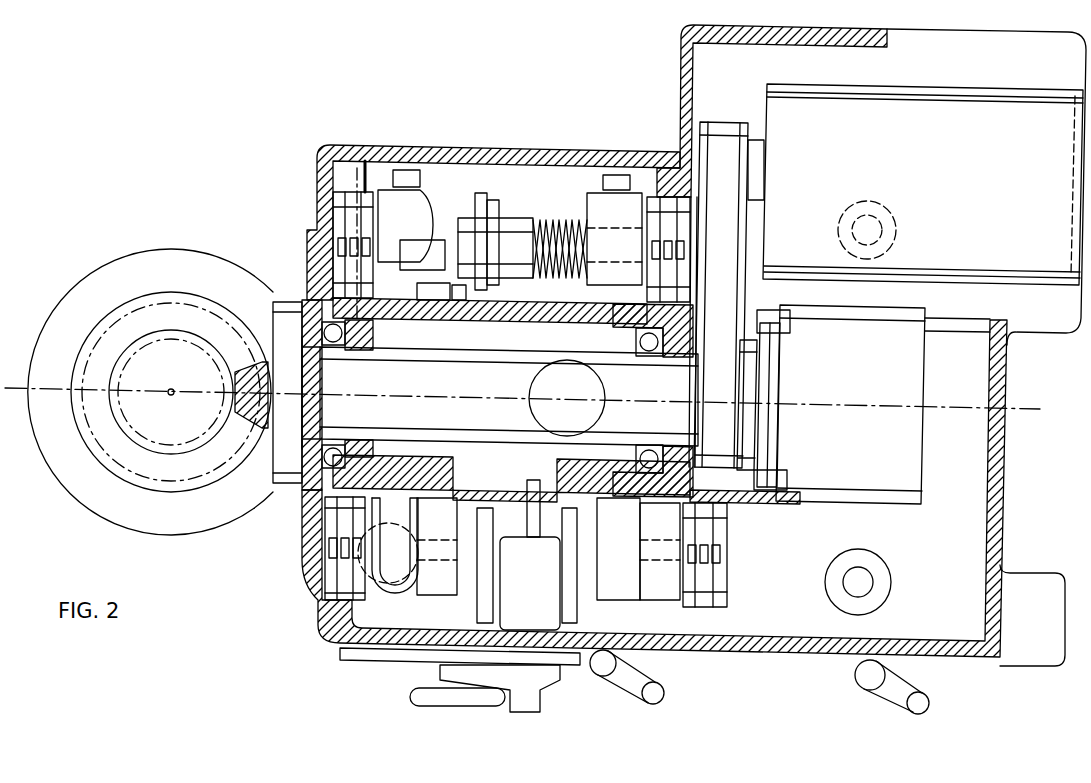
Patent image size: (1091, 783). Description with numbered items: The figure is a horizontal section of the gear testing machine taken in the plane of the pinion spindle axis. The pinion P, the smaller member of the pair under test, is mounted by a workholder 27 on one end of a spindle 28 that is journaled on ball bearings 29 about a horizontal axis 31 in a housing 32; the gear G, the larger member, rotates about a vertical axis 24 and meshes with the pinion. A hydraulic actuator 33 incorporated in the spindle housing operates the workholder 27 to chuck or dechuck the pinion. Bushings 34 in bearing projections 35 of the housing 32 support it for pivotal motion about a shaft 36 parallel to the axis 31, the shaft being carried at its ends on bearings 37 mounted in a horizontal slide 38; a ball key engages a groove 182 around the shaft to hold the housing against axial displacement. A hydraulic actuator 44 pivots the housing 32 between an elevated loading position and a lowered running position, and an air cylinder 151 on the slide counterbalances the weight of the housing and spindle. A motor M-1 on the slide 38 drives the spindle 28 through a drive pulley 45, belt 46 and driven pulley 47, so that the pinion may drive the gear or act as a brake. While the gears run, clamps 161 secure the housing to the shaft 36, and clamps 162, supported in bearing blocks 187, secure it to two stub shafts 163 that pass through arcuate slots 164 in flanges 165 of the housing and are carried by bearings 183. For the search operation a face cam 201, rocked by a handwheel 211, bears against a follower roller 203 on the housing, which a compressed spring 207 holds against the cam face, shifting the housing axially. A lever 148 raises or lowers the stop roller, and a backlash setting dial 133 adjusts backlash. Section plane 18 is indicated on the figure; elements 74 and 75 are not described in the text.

The section plane 18— 18 is at (352, 183).
The vertical axis 24 is at (171, 390).
The workholder 27 is at (150, 392).
The spindle 28 is at (443, 420).
The ball bearings 29 is at (342, 441).
The horizontal axis 31 is at (898, 409).
The housing 32 is at (548, 312).
The hydraulic actuator 33 is at (778, 316).
The bushings 34 is at (529, 248).
The bearing projections 35 is at (427, 226).
The shaft 36 is at (495, 260).
The bearings 37 is at (330, 238).
The horizontal slide 38 is at (520, 157).
The hydraulic actuator 44 is at (525, 530).
The drive pulley 45 is at (748, 135).
The belt 46 is at (708, 327).
The driven pulley 47 is at (750, 395).
The control lever 74 is at (888, 700).
The plug 75 is at (320, 192).
The backlash setting dial 133 is at (545, 680).
The lever 148 is at (658, 695).
The air cylinder 151 is at (535, 396).
The clamps 161 is at (435, 189).
The clamps 162 is at (609, 564).
The stub shafts 163 is at (412, 521).
The arcuate slots 164 is at (404, 556).
The flanges 165 is at (400, 600).
The groove 182 is at (478, 252).
The bearings 183 is at (322, 540).
The bearing block 187 is at (470, 565).
The face cam 201 is at (490, 215).
The follower roller 203 is at (462, 303).
The compressed spring 207 is at (560, 222).
The handwheel 211 is at (412, 695).
The gear G is at (197, 450).
The pinion P is at (238, 392).
The motor M-1 is at (966, 177).